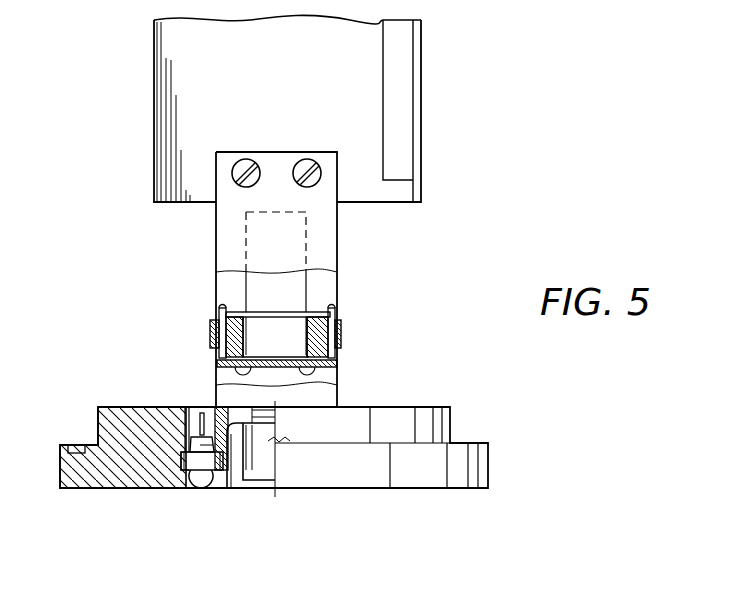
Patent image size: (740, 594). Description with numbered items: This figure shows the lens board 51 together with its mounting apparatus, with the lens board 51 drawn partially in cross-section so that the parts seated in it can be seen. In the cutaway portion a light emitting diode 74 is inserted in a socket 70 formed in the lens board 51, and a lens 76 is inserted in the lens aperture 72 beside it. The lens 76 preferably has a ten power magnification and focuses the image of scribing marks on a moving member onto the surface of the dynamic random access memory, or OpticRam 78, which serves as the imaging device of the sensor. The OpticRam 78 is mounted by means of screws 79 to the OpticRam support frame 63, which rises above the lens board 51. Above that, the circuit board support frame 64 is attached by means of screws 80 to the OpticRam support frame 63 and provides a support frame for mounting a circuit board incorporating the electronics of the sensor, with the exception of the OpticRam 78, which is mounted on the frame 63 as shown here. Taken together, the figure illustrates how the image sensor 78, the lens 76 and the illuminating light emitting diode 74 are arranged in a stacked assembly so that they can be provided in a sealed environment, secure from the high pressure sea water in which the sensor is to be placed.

The lens board 51 is at (123, 422).
The OpticRam support frame 63 is at (230, 232).
The circuit board support frame 64 is at (173, 58).
The socket 70 is at (170, 473).
The lens aperture 72 is at (231, 473).
The light emitting diode 74 is at (197, 480).
The lens 76 is at (263, 462).
The dynamic random access memory (OpticRam) 78 is at (292, 313).
The screws 79 is at (341, 335).
The screws 80 is at (303, 165).